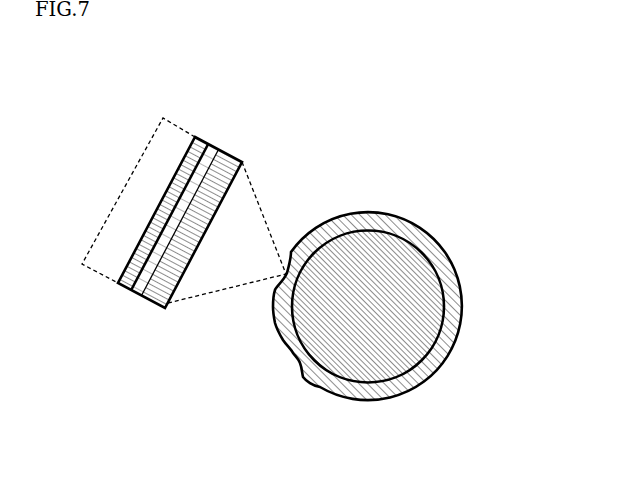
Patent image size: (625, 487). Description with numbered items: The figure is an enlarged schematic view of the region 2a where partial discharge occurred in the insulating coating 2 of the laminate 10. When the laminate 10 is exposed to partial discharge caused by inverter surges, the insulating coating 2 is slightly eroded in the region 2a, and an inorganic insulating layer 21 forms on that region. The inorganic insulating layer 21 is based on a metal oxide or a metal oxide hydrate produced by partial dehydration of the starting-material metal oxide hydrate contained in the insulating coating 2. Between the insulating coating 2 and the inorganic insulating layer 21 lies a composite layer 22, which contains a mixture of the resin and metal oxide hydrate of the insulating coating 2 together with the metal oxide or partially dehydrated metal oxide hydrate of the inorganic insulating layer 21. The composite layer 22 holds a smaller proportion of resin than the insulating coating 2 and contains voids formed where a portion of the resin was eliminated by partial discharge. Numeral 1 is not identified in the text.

The laminate 10 is at (401, 198).
The conductor 1 is at (452, 336).
The insulating coating 2 is at (458, 273).
The region where partial discharge occurred 2a is at (160, 207).
The inorganic insulating layer 21 is at (211, 142).
The composite layer 22 is at (225, 152).